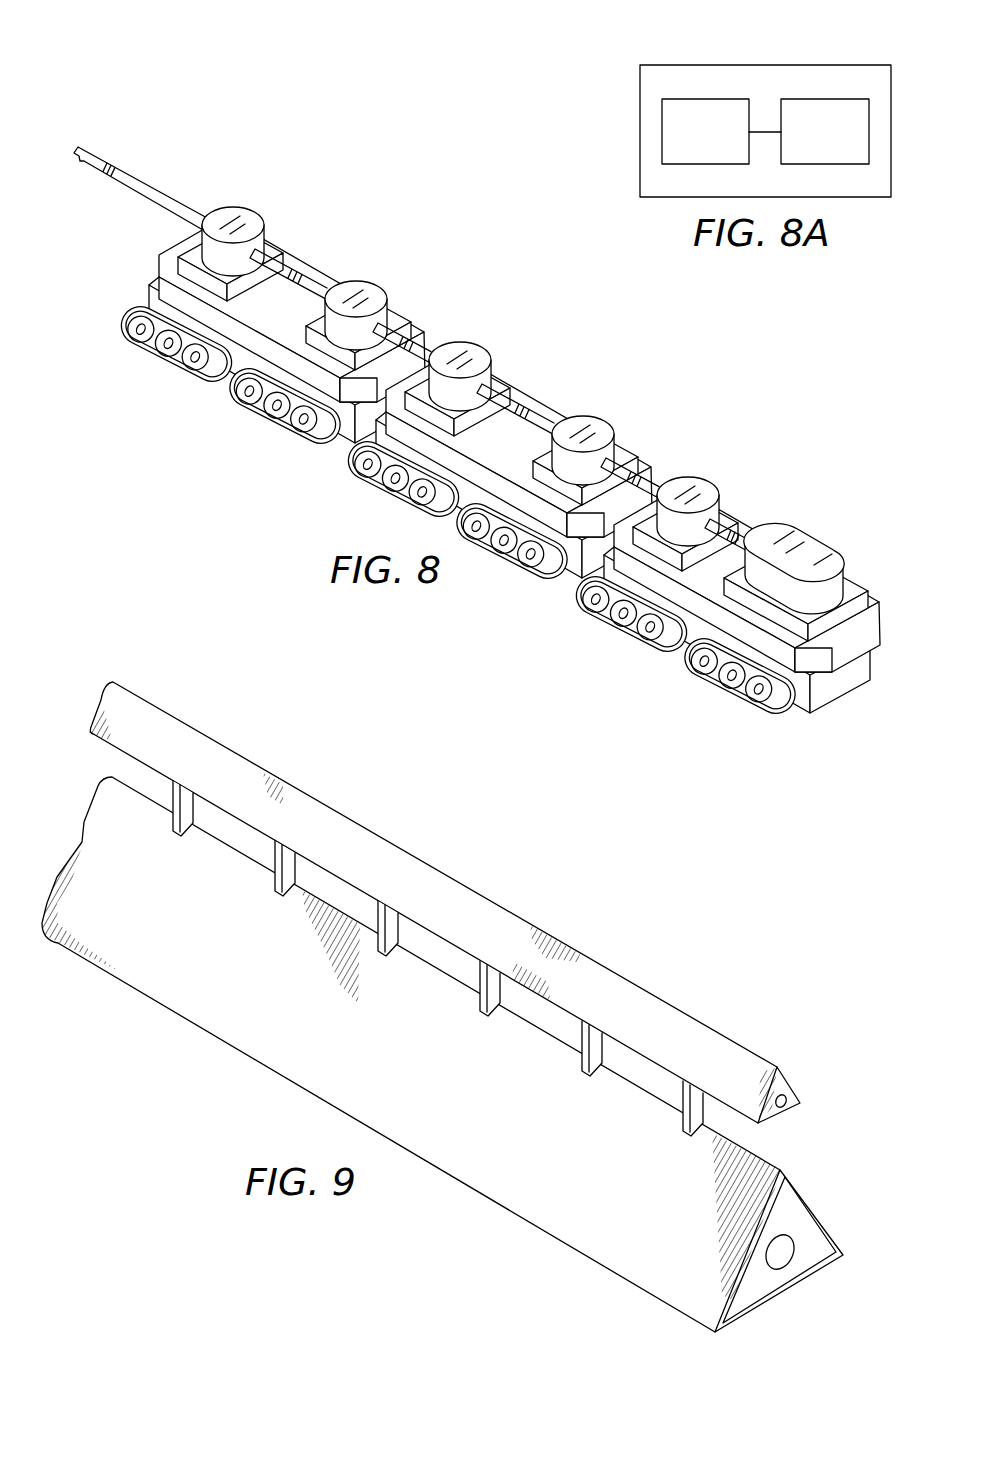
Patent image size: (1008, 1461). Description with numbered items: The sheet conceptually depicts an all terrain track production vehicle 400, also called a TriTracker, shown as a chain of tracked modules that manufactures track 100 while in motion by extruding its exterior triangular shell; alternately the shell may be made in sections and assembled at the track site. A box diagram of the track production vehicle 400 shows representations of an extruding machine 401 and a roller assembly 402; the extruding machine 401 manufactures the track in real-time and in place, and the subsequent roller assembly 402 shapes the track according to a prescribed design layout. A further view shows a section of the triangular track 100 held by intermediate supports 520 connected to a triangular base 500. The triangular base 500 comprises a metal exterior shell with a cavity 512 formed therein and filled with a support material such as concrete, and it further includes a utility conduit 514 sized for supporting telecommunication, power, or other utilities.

In FIG. 8, the track 100 is at (140, 167).
In FIG. 9, the track 100 is at (369, 822).
In FIG. 8, the all terrain track production vehicle 400 is at (486, 338).
In FIG. 8A, the all terrain track production vehicle 400 is at (707, 57).
In FIG. 8A, the extruding machine 401 is at (727, 143).
In FIG. 8A, the roller assembly 402 is at (847, 143).
In FIG. 9, the triangular base 500 is at (459, 1060).
In FIG. 9, the cavity 512 is at (810, 1257).
In FIG. 9, the utility conduit 514 is at (778, 1258).
In FIG. 9, the intermediate supports 520 is at (682, 1104).